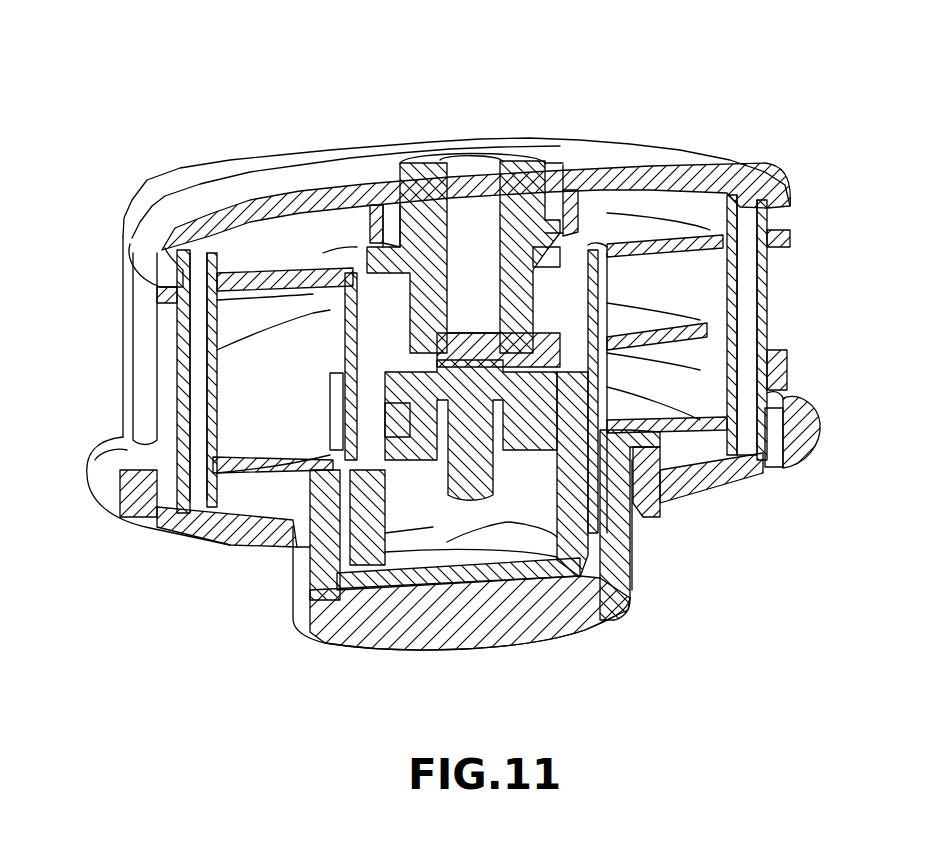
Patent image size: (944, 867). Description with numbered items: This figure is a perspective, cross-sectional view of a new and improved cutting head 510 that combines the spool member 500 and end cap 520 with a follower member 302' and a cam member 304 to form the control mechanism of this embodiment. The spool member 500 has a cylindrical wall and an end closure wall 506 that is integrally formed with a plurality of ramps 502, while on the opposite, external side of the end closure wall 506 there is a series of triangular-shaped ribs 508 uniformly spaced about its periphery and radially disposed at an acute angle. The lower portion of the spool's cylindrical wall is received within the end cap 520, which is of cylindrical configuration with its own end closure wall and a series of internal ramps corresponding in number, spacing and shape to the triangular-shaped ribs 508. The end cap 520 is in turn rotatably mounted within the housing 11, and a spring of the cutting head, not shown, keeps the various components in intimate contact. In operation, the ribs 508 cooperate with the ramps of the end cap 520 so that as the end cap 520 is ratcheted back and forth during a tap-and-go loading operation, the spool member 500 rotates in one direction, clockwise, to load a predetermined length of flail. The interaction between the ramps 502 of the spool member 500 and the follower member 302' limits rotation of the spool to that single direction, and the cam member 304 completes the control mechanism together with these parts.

The cutting head 510 is at (275, 114).
The housing 11 is at (208, 562).
The cam member 304 is at (540, 333).
The spool member 500 is at (655, 230).
The end cap 520 is at (632, 566).
The triangular-shaped ribs 508 is at (597, 588).
The follower member 302' is at (461, 589).
The ramps 502 is at (497, 540).
The end closure wall 506 is at (447, 573).